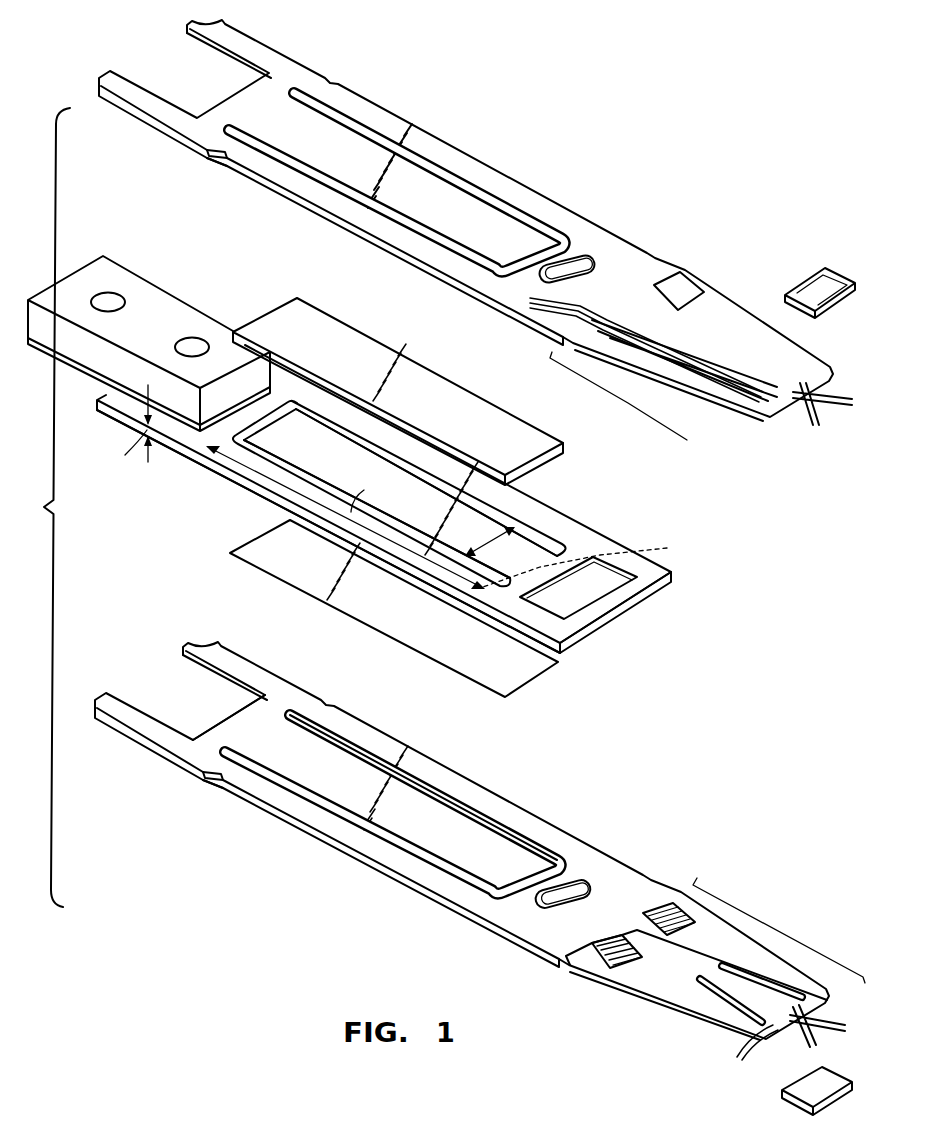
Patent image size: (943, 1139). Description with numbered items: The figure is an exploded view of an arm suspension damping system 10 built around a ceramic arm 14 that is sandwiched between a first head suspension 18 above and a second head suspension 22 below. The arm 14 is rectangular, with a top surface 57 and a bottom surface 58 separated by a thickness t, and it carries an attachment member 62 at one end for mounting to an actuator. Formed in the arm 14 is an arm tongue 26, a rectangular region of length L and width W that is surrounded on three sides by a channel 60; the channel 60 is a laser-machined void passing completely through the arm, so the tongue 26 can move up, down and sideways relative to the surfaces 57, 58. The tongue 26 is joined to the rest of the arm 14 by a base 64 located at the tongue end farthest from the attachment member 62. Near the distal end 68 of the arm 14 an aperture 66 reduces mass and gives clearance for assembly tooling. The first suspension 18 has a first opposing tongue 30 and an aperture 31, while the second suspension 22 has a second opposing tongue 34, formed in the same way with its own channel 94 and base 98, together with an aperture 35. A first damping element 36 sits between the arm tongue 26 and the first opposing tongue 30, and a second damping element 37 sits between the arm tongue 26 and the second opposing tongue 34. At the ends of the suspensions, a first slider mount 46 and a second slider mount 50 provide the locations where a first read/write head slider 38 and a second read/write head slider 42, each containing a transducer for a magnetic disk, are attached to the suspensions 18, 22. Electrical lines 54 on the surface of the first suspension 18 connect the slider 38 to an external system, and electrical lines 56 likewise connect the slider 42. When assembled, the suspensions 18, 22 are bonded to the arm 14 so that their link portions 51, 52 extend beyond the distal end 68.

The arm suspension damping system 10 is at (39, 507).
The arm 14 is at (557, 632).
The first head suspension 18 is at (602, 225).
The second head suspension 22 is at (386, 876).
The arm tongue 26 is at (301, 459).
The first opposing tongue 30 is at (425, 214).
The aperture 31 is at (595, 270).
The second opposing tongue 34 is at (335, 797).
The aperture 35 is at (585, 893).
The first damping element 36 is at (457, 393).
The second damping element 37 is at (432, 660).
The first read/write head slider 38 is at (832, 290).
The second read/write head slider 42 is at (798, 1081).
The first slider mount 46 is at (800, 425).
The second slider mount 50 is at (828, 1030).
The link portion 51 is at (663, 382).
The link portion 52 is at (715, 959).
The electrical lines 54 is at (741, 396).
The electrical lines 56 is at (742, 1049).
The top surface 57 is at (110, 394).
The bottom surface 58 is at (228, 478).
The channel 60 is at (483, 497).
The attachment member 62 is at (118, 292).
The base 64 is at (592, 559).
The aperture 66 is at (583, 593).
The distal end 68 is at (652, 603).
The channel 94 is at (497, 812).
The base 98 is at (257, 733).